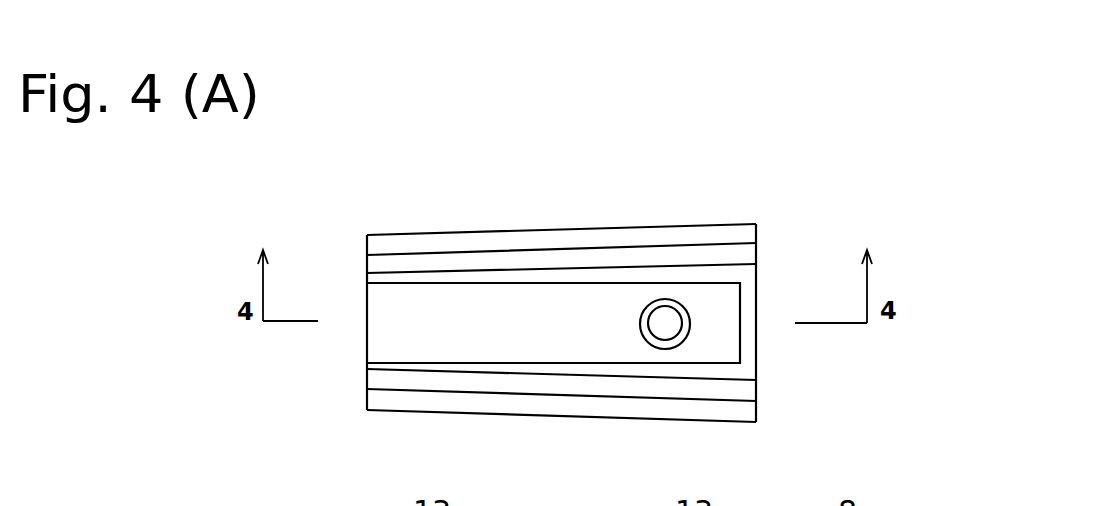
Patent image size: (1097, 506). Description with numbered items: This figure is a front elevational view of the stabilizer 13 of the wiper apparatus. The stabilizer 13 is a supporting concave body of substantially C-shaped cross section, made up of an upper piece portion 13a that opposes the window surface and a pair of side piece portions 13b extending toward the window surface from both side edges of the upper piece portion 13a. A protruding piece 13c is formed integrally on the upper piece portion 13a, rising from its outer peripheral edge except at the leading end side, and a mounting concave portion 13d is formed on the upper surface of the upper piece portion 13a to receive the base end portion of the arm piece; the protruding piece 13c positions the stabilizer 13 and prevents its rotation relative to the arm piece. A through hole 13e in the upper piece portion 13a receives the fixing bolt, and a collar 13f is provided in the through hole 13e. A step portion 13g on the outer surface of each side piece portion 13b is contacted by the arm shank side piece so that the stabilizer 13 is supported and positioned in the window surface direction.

The stabilizer 13 is at (740, 120).
The upper piece portion 13a is at (535, 295).
The side piece portions 13b is at (509, 232).
The protruding piece 13c is at (478, 276).
The mounting concave portion 13d is at (586, 283).
The through hole 13e is at (678, 326).
The collar 13f is at (647, 326).
The step portion 13g is at (747, 253).